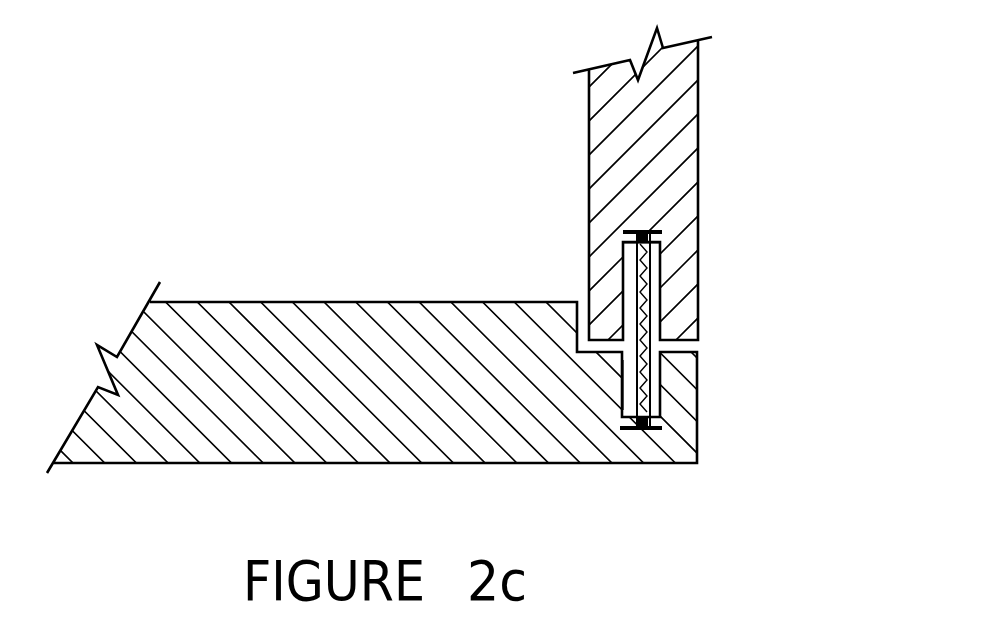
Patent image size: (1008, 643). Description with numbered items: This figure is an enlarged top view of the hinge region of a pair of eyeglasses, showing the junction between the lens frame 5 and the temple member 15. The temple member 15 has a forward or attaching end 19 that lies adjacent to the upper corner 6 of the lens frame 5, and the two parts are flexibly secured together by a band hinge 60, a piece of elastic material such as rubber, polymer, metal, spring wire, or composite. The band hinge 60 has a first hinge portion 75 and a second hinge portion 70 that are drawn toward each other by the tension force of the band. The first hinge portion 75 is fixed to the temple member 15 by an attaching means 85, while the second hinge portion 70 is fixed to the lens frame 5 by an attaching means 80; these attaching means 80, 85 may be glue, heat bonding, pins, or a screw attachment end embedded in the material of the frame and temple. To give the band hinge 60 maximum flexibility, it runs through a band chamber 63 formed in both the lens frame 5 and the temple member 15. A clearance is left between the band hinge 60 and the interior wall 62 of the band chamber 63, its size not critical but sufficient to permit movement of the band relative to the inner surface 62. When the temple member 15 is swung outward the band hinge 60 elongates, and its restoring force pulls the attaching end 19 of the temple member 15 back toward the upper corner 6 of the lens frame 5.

The lens frame 5 is at (250, 302).
The temple member 15 is at (700, 125).
The upper corner 6 is at (712, 450).
The attaching end 19 is at (793, 242).
The band hinge 60 is at (652, 318).
The interior wall 62 is at (655, 290).
The band chamber 63 is at (623, 272).
The second hinge portion 70 is at (647, 392).
The first hinge portion 75 is at (645, 266).
The attaching means 80 is at (645, 432).
The attaching means 85 is at (655, 231).